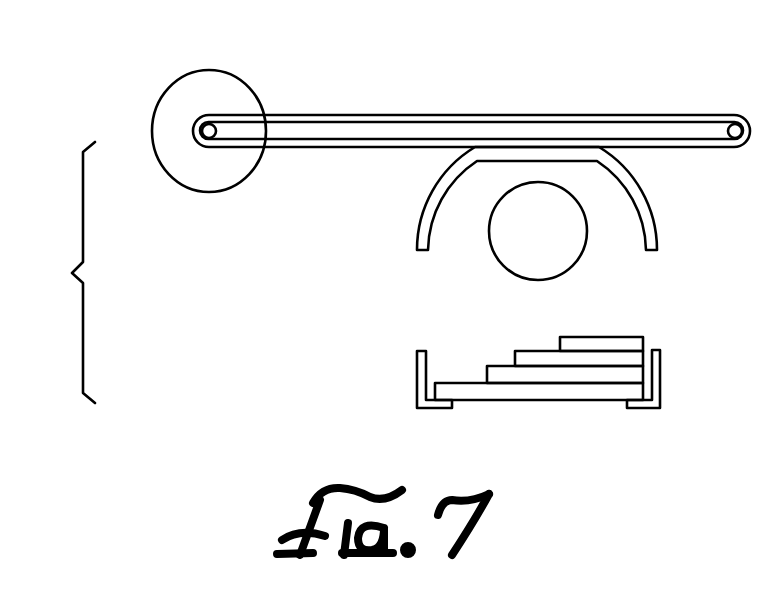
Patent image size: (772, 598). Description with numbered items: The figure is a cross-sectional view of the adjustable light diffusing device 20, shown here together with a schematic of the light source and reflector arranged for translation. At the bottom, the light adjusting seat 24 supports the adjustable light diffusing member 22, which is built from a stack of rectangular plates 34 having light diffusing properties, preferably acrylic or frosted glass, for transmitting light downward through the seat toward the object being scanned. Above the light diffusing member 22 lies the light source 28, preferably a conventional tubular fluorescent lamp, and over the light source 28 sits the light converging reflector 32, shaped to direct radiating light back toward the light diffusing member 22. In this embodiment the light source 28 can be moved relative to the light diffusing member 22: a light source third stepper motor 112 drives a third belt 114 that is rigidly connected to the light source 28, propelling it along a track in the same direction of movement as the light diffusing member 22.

The adjustable light diffusing device 20 is at (386, 224).
The light source third stepper motor 112 is at (218, 88).
The third belt 114 is at (613, 128).
The light converging reflector 32 is at (418, 231).
The light source 28 is at (520, 243).
The adjustable light diffusing member 22 is at (576, 340).
The rectangular plates 34 is at (643, 337).
The light adjusting seat 24 is at (420, 388).